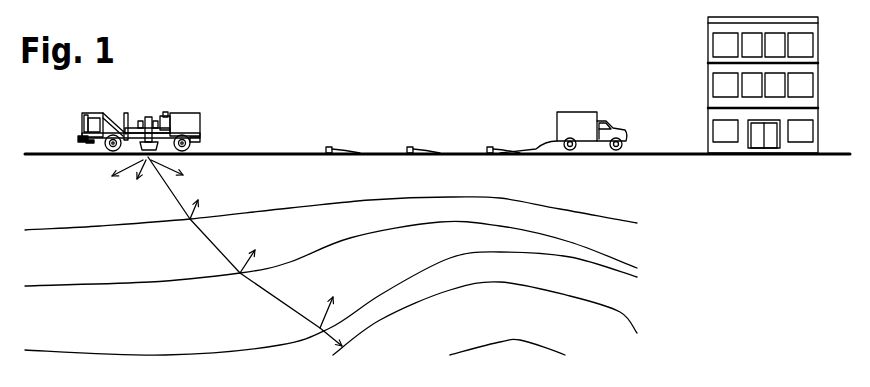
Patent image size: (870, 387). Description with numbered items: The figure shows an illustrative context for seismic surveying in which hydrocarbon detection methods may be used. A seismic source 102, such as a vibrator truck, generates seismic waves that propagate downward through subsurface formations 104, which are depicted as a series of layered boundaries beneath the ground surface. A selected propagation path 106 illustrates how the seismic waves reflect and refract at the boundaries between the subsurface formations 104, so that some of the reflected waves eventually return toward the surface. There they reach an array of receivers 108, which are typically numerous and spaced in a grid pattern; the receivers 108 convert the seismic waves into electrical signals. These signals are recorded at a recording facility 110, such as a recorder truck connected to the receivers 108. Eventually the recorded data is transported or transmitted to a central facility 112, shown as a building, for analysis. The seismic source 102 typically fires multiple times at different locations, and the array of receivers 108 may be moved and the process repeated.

The seismic source 102 is at (140, 127).
The subsurface formations 104 is at (642, 157).
The propagation path 106 is at (166, 184).
The receivers 108 is at (488, 148).
The recording facility 110 is at (556, 123).
The central facility 112 is at (708, 58).